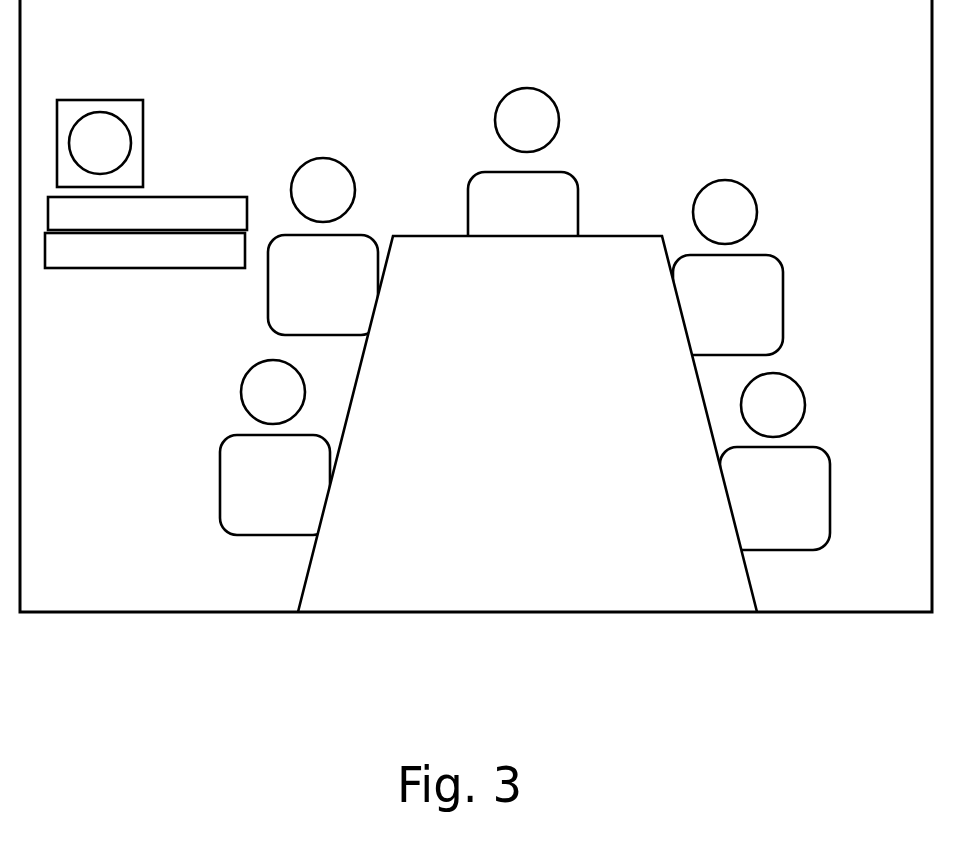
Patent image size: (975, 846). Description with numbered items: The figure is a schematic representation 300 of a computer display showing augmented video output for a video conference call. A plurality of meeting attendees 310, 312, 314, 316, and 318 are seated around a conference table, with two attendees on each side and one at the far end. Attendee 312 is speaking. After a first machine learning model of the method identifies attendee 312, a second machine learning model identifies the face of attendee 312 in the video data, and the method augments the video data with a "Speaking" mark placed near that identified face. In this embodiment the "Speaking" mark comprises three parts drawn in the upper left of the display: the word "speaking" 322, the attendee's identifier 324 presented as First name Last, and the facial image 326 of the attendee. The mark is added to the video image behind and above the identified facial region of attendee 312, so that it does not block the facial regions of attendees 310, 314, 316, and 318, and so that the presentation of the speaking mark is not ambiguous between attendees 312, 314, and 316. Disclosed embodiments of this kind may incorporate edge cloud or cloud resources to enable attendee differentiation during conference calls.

The schematic representation 300 is at (127, 578).
The meeting attendee 310 is at (302, 485).
The meeting attendee 312 is at (350, 284).
The meeting attendee 314 is at (550, 220).
The meeting attendee 316 is at (754, 305).
The meeting attendee 318 is at (802, 500).
The word "speaking" 322 is at (169, 180).
The attendee's identifier 324 is at (145, 280).
The facial image 326 is at (121, 112).